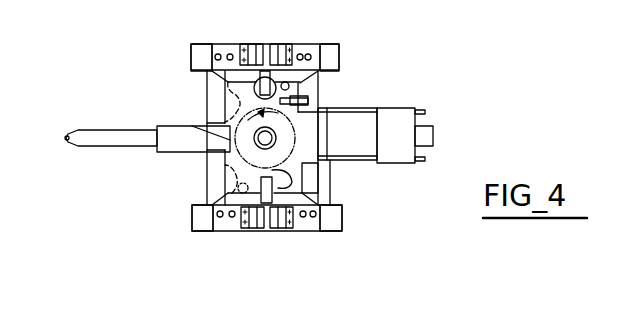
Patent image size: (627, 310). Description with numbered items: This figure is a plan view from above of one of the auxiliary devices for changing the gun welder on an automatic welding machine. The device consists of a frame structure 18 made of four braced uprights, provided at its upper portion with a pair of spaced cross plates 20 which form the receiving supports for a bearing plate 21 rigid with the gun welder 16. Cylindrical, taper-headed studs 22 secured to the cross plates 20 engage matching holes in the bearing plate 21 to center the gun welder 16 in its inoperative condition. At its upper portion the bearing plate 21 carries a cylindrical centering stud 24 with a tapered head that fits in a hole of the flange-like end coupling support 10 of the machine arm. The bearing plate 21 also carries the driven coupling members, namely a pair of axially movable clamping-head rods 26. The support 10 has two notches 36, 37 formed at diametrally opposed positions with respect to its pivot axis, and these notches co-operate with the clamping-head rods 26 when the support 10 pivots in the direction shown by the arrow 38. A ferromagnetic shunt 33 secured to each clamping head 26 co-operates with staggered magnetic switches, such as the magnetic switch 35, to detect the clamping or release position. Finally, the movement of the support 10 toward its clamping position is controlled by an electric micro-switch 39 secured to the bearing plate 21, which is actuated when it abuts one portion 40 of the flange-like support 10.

The end coupling support 10 is at (222, 144).
The gun welder 16 is at (398, 123).
The frame structure 18 is at (340, 73).
The cross plates 20 is at (193, 209).
The bearing plate 21 is at (240, 166).
The taper-headed studs 22 is at (320, 58).
The centering stud 24 is at (200, 127).
The clamping-head rods 26 is at (222, 85).
The ferromagnetic shunt 33 is at (246, 71).
The magnetic switch 35 is at (277, 44).
The notch 36 is at (228, 100).
The notch 37 is at (313, 162).
The arrow 38 is at (315, 111).
The electric micro-switch 39 is at (332, 95).
The portion of the flange-like support 40 is at (235, 107).